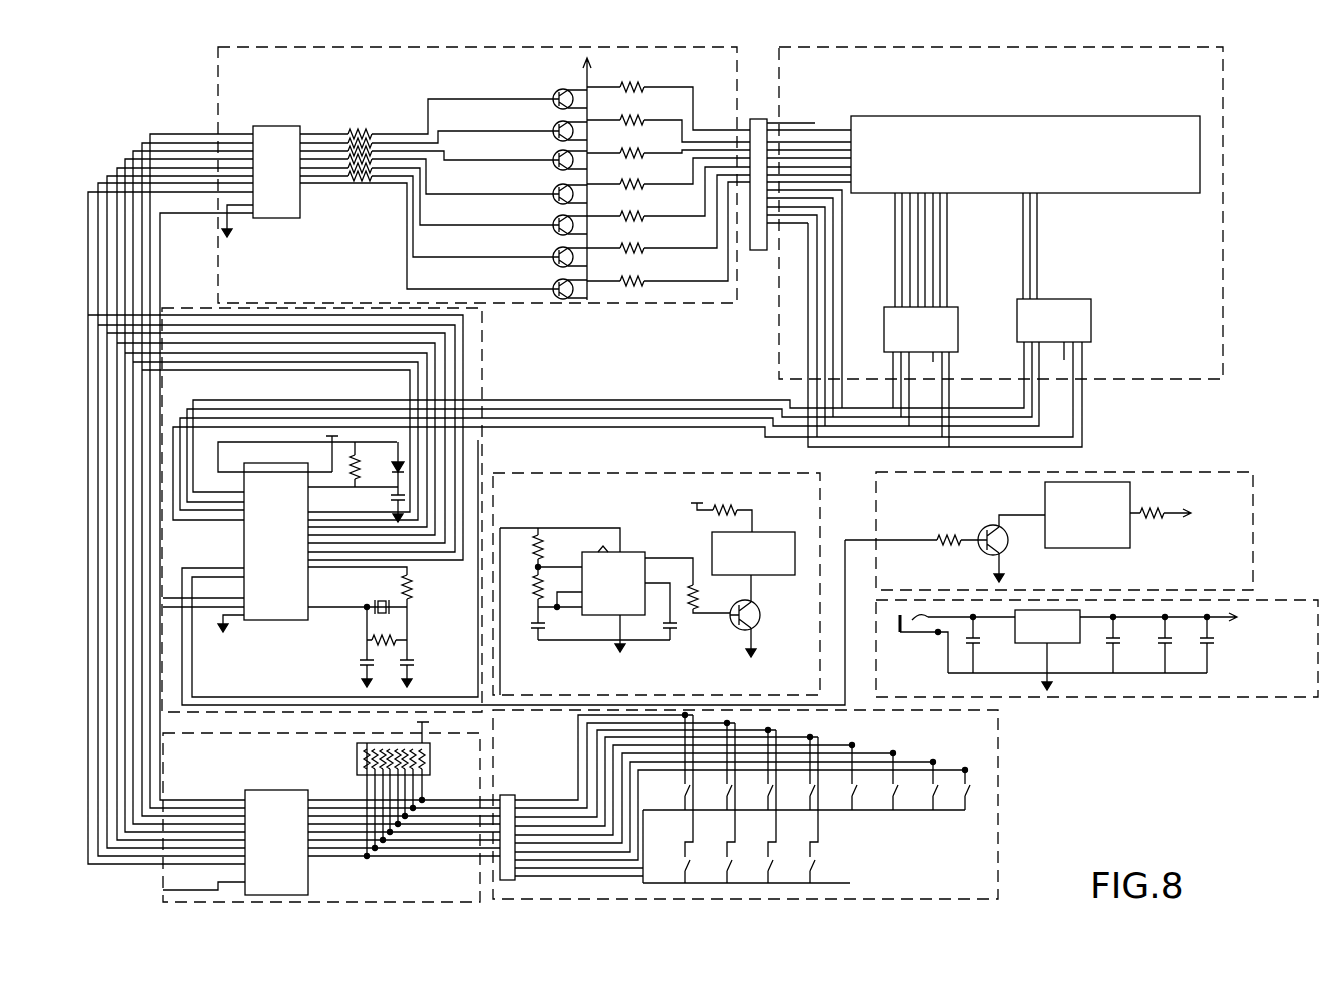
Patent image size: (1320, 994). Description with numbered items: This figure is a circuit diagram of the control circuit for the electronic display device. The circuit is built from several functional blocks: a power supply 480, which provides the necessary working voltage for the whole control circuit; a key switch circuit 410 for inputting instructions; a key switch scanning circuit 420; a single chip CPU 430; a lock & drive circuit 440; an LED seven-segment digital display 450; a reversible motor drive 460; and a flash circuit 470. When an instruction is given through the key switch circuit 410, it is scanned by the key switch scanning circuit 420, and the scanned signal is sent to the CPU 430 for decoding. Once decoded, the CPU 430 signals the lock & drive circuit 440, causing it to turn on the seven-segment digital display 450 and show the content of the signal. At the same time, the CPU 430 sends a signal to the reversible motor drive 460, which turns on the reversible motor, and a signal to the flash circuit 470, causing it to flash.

The key switch circuit 410 is at (780, 804).
The key switch scanning circuit 420 is at (290, 733).
The single chip CPU 430 is at (503, 510).
The lock & drive circuit 440 is at (484, 175).
The 7-segment digital display 450 is at (986, 247).
The reversible motor drive 460 is at (656, 569).
The flash circuit 470 is at (1292, 546).
The power supply 480 is at (1203, 712).